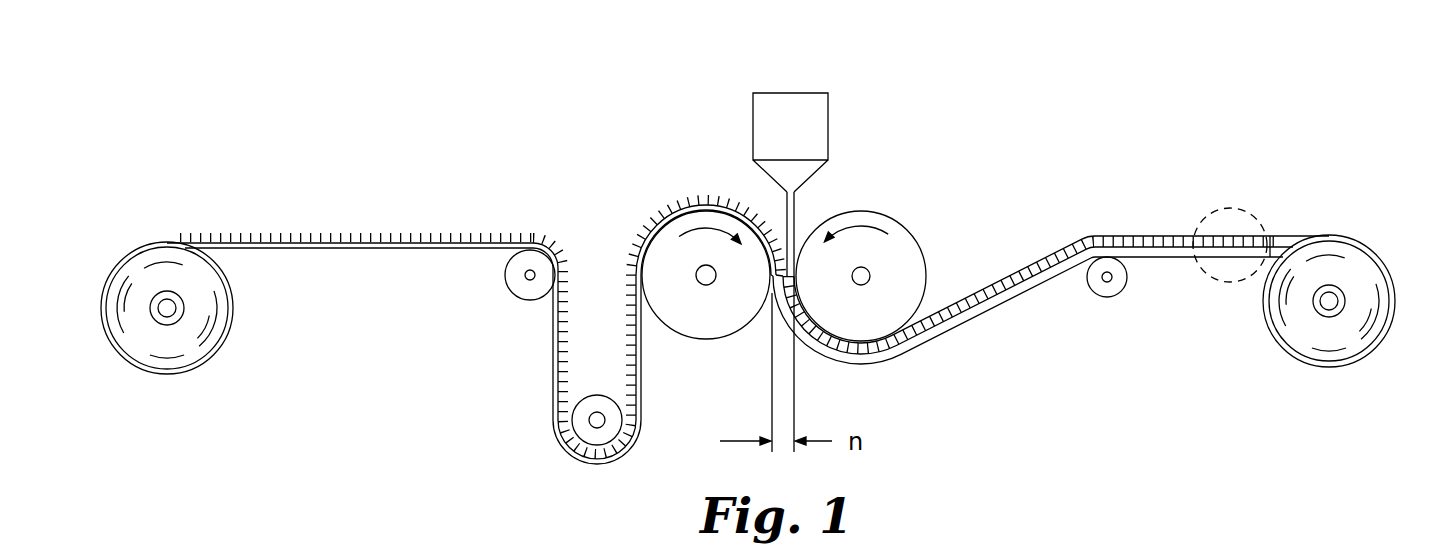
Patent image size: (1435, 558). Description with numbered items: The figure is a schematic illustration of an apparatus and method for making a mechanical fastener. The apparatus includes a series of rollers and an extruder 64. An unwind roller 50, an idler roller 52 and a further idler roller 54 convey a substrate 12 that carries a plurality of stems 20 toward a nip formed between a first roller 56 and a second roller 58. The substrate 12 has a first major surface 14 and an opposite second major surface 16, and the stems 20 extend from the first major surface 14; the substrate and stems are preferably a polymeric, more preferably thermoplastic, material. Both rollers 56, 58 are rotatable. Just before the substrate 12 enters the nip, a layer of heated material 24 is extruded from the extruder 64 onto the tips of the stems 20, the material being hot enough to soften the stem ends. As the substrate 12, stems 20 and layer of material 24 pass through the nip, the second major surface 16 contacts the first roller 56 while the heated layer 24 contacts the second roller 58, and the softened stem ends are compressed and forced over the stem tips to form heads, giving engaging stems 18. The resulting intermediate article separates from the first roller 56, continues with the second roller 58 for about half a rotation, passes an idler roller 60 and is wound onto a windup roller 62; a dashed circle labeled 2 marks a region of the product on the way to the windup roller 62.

The section indicator circle (FIG. 2 region) 2 is at (1248, 210).
The substrate 12 is at (227, 242).
The first major surface 14 is at (357, 241).
The second major surface 16 is at (278, 250).
The engaging stems 18 is at (1053, 257).
The stems 20 is at (316, 240).
The layer of heated material 24 is at (796, 212).
The unwind roller 50 is at (157, 320).
The idler roller 52 is at (521, 288).
The idler roller 54 is at (580, 428).
The first roller 56 is at (695, 330).
The second roller 58 is at (912, 250).
The idler roller 60 is at (1099, 290).
The windup roller 62 is at (1320, 310).
The extruder 64 is at (791, 103).